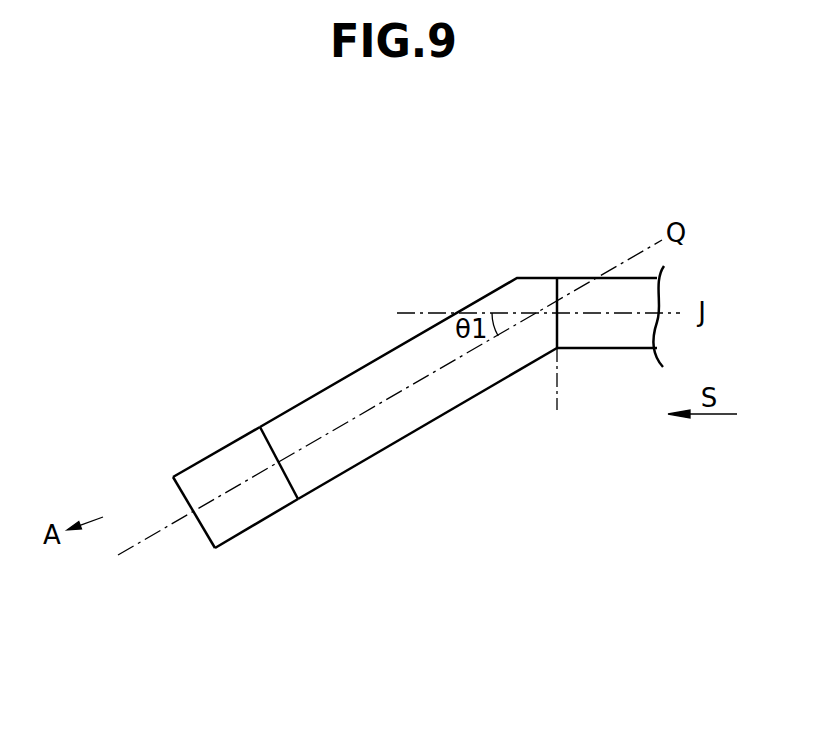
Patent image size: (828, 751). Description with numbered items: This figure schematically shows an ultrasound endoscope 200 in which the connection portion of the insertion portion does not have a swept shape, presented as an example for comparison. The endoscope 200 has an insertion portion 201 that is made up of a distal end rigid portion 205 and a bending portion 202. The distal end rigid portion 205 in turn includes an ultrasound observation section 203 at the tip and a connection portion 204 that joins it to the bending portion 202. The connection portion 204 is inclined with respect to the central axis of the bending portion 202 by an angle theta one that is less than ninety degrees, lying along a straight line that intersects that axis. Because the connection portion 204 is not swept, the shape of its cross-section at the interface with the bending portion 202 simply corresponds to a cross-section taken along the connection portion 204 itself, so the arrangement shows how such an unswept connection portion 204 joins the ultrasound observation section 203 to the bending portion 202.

The endoscope 200 is at (580, 261).
The insertion portion 201 is at (400, 611).
The bending portion 202 is at (607, 340).
The ultrasound observation section 203 is at (242, 493).
The connection portion 204 is at (437, 407).
The distal end rigid portion 205 is at (299, 602).